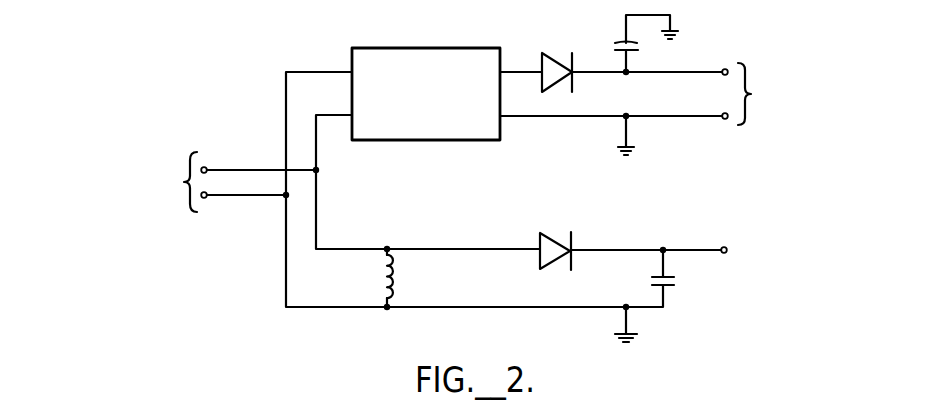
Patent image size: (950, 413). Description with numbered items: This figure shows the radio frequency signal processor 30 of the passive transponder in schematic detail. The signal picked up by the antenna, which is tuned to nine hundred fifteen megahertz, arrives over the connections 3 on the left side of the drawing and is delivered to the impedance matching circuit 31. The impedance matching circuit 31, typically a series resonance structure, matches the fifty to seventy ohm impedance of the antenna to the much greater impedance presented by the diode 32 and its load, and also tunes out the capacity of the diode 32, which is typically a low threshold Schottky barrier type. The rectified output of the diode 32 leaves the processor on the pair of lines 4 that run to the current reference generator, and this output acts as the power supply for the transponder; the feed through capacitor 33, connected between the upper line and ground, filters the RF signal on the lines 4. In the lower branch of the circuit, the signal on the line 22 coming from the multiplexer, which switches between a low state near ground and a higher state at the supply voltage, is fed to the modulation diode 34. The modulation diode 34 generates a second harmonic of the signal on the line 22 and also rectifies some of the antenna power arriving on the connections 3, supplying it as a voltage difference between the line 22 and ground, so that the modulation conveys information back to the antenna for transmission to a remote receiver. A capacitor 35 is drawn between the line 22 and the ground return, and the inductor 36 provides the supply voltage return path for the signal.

The radio frequency signal processor 30 is at (227, 33).
The impedance matching circuit 31 is at (445, 48).
The diode 32 is at (550, 53).
The capacitor 33 is at (617, 46).
The line 4 is at (675, 74).
The connections 3 is at (243, 171).
The modulation diode 34 is at (550, 232).
The line 22 is at (678, 250).
The capacitor 35 is at (674, 280).
The inductor 36 is at (393, 280).